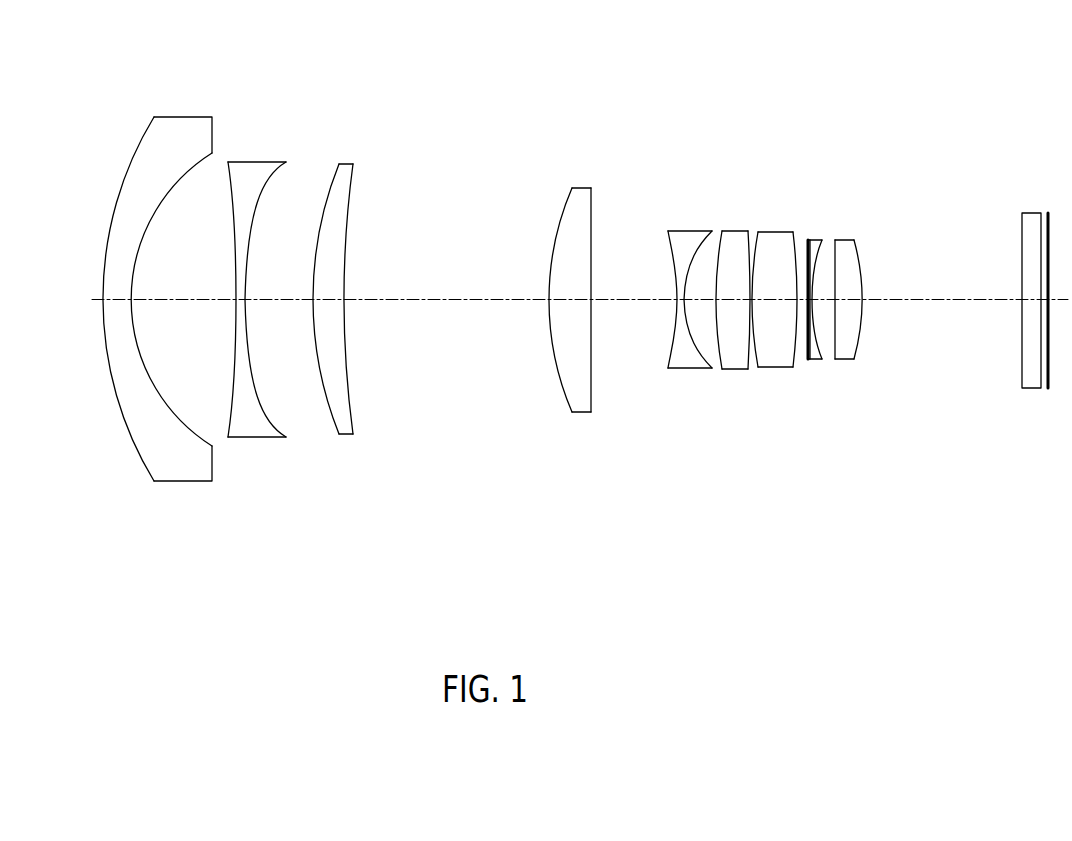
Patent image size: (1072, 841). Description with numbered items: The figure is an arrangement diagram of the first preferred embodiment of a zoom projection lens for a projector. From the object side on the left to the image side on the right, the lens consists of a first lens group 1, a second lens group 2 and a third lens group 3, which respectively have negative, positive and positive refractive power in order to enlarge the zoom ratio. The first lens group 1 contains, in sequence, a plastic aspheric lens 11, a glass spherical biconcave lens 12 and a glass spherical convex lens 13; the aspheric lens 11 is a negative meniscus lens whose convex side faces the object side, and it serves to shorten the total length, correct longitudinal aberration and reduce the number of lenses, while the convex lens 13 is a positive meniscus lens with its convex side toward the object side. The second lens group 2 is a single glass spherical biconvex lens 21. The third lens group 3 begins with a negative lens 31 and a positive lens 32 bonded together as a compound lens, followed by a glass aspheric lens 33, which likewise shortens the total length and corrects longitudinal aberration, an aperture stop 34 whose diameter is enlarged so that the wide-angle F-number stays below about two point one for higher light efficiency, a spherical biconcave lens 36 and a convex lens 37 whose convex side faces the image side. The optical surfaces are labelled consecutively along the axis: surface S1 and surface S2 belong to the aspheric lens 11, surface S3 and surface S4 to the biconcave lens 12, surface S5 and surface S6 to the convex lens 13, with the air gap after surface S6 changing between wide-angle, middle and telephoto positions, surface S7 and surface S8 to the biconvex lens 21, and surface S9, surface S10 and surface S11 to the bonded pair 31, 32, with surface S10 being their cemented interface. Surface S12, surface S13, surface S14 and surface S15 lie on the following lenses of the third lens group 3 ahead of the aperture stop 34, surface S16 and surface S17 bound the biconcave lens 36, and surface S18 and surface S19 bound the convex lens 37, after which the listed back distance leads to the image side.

The first lens group 1 is at (353, 555).
The second lens group 2 is at (592, 555).
The third lens group 3 is at (860, 555).
The plastic aspheric lens 11 is at (169, 294).
The glass spherical biconcave lens 12 is at (251, 297).
The glass spherical convex lens 13 is at (349, 283).
The glass spherical convex lens 21 is at (580, 292).
The negative lens 31 is at (680, 296).
The positive lens 32 is at (720, 272).
The glass aspheric lens 33 is at (768, 288).
The aperture stop 34 is at (805, 313).
The spherical biconcave lens 36 is at (859, 303).
The convex lens 37 is at (898, 324).
The surface S1 is at (142, 141).
The surface S2 is at (212, 163).
The surface S3 is at (228, 170).
The surface S4 is at (282, 184).
The surface S5 is at (336, 184).
The surface S6 is at (353, 183).
The surface S7 is at (567, 200).
The surface S8 is at (592, 205).
The surface S9 is at (668, 242).
The surface S10 is at (698, 247).
The surface S11 is at (715, 296).
The surface S12 is at (723, 230).
The surface S13 is at (750, 232).
The surface S14 is at (758, 232).
The surface S15 is at (796, 232).
The surface S16 is at (806, 240).
The surface S17 is at (817, 256).
The surface S18 is at (834, 257).
The surface S19 is at (861, 267).